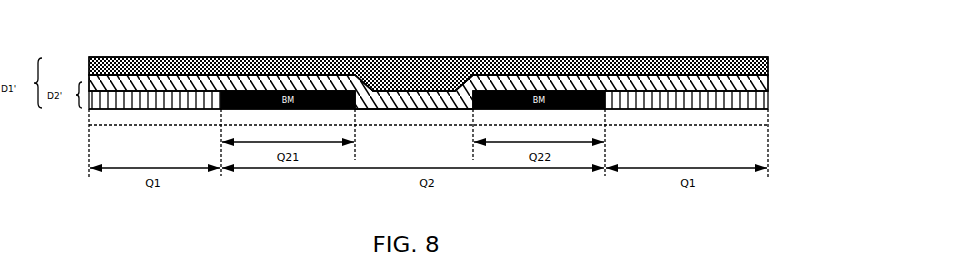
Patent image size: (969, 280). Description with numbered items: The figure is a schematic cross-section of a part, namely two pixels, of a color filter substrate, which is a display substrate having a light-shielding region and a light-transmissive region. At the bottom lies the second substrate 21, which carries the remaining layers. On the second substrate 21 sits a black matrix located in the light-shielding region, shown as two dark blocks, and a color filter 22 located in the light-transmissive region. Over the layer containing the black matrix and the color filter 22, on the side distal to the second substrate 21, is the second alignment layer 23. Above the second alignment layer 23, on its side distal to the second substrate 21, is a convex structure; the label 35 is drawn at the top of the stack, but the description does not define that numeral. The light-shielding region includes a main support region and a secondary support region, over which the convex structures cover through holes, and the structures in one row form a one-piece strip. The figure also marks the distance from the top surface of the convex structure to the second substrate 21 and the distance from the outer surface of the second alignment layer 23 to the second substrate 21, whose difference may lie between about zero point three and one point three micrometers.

The substrate 35 is at (769, 58).
The second alignment layer 23 is at (770, 74).
The color filter 22 is at (748, 85).
The second substrate 21 is at (752, 118).